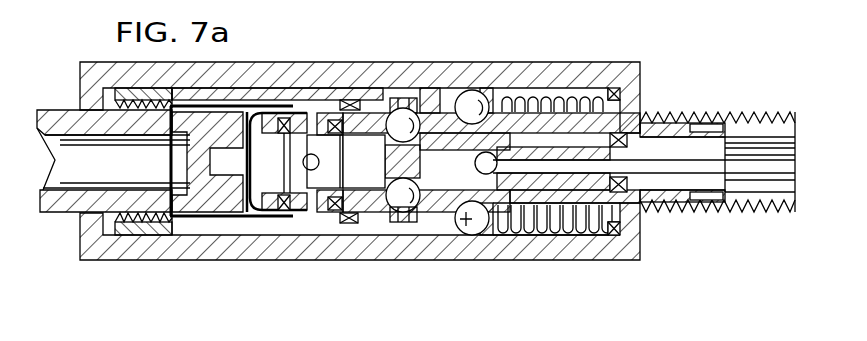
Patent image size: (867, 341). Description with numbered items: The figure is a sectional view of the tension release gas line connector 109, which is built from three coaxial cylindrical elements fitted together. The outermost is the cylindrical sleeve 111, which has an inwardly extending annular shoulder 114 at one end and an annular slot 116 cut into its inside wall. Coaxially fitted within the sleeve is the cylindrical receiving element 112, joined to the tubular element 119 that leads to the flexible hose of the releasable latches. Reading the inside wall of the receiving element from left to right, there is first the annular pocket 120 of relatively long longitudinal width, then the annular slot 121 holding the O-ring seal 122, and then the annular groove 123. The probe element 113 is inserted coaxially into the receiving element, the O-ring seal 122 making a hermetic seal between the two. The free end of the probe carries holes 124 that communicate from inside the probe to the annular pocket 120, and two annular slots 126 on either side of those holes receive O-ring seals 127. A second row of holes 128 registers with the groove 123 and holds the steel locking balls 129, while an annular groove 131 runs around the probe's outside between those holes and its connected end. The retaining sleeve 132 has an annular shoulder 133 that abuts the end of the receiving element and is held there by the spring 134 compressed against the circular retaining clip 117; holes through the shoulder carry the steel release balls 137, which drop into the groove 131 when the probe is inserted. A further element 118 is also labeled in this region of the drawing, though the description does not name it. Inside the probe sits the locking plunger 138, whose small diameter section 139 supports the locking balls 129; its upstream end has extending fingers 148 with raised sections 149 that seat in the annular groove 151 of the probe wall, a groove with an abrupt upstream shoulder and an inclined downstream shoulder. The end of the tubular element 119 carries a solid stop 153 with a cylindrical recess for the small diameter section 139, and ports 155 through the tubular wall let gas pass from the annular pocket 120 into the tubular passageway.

The tension release gas line connector 109 is at (563, 48).
The cylindrical sleeve 111 is at (412, 258).
The cylindrical receiving element 112 is at (340, 62).
The probe element 113 is at (362, 180).
The annular shoulder 114 is at (80, 86).
The annular slot 116 is at (620, 96).
The circular retaining clip 117 is at (617, 232).
The spring 118 is at (518, 240).
The tubular element 119 is at (72, 204).
The annular pocket 120 is at (249, 217).
The annular slot 121 is at (336, 212).
The O-ring seal 122 is at (356, 204).
The annular groove 123 is at (397, 214).
The holes 124 is at (312, 118).
The annular slots 126 is at (293, 180).
The O-ring seals 127 is at (282, 132).
The holes 128 is at (404, 100).
The steel locking balls 129 is at (402, 98).
The annular groove 131 is at (483, 84).
The retaining sleeve 132 is at (503, 235).
The annular shoulder 133 is at (498, 242).
The spring 134 is at (583, 237).
The steel release balls 137 is at (473, 235).
The locking plunger 138 is at (565, 180).
The small diameter section 139 is at (400, 214).
The extending fingers 148 is at (720, 167).
The raised section 149 is at (720, 202).
The annular groove 151 is at (708, 123).
The solid stop 153 is at (211, 200).
The ports 155 is at (174, 140).